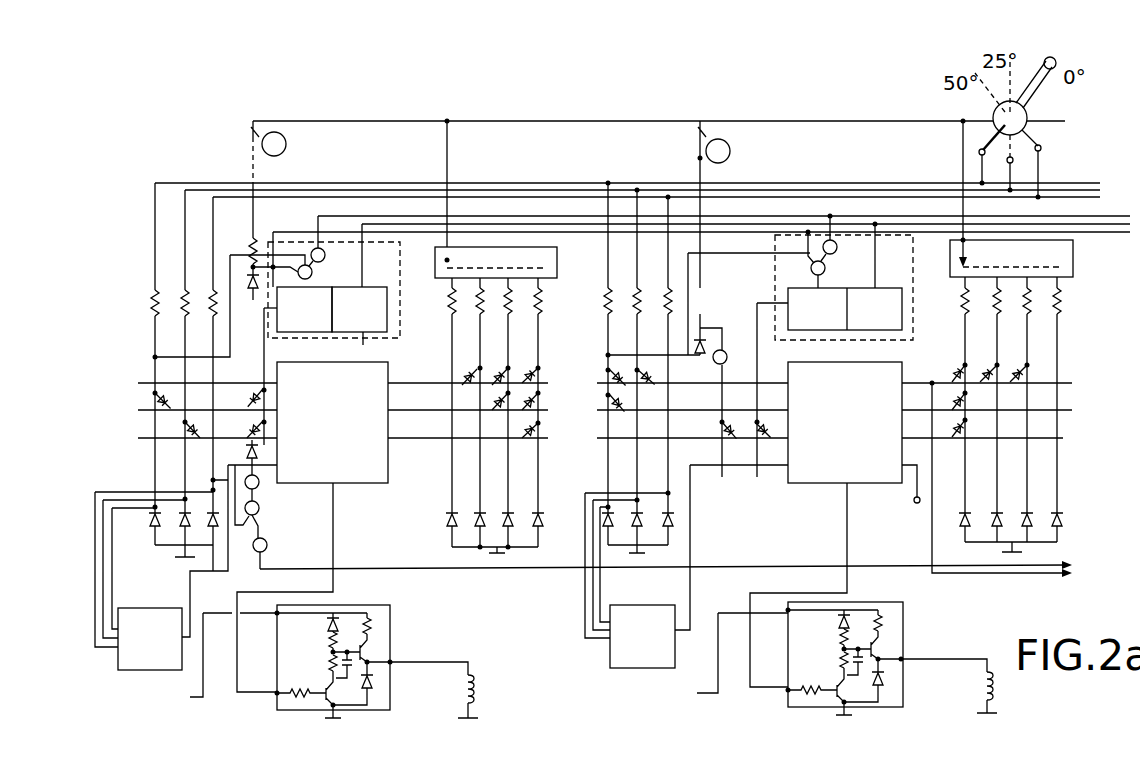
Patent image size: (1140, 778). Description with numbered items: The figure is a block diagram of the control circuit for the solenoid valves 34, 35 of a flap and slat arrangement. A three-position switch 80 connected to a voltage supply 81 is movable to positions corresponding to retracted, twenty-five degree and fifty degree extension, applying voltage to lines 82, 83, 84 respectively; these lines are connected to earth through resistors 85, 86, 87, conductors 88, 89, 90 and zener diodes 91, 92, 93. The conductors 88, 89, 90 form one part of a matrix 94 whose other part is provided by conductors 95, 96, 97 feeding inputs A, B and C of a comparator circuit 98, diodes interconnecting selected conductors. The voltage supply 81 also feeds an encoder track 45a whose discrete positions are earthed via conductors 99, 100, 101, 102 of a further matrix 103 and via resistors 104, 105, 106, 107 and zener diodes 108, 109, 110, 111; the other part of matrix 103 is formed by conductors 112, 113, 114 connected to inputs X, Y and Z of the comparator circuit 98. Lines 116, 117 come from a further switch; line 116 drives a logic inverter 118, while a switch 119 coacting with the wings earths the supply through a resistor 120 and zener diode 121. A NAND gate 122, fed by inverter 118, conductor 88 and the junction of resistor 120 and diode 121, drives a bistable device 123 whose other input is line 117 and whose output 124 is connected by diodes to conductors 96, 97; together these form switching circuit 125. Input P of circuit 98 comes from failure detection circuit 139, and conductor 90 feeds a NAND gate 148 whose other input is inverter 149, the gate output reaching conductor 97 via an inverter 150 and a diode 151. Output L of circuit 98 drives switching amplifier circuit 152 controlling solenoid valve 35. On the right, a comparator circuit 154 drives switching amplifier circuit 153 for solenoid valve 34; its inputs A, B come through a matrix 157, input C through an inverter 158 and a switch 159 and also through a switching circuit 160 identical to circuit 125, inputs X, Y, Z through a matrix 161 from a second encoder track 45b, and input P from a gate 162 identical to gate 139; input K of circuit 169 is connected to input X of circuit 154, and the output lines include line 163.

The voltage supply 81 is at (600, 121).
The switch 119 is at (286, 144).
The switch 159 is at (736, 204).
The line 82 is at (830, 183).
The line 83 is at (865, 190).
The line 84 is at (912, 196).
The three-position switch 80 is at (1052, 113).
The line 116 is at (705, 216).
The line 117 is at (768, 224).
The switching circuit 160 is at (950, 262).
The second track of the encoder 45b is at (1065, 277).
The matrix 161 is at (946, 363).
The circuit 169 is at (1012, 490).
The output line Y 163 is at (676, 555).
The comparator circuit 154 is at (877, 478).
The matrix 157 is at (605, 443).
The inverter 158 is at (709, 365).
The conductor 99 is at (452, 346).
The gate 162 is at (636, 617).
The switching amplifier circuit 153 is at (895, 614).
The solenoid valve 34 is at (980, 677).
The switching circuit 125 is at (385, 256).
The output 124 is at (268, 352).
The bistable device 123 is at (330, 294).
The logic inverter 118 is at (325, 256).
The NAND gate 122 is at (312, 273).
The resistor 120 is at (262, 238).
The zener diode 121 is at (252, 290).
The resistor 85 is at (152, 298).
The resistor 86 is at (180, 300).
The resistor 87 is at (206, 300).
The conductor 88 is at (152, 356).
The conductor 89 is at (182, 353).
The conductor 90 is at (212, 353).
The matrix 94 is at (135, 426).
The zener diode 91 is at (150, 528).
The zener diode 92 is at (180, 530).
The zener diode 93 is at (211, 532).
The failure detection circuit 139 is at (138, 660).
The comparator circuit 98 is at (352, 478).
The conductor 95 is at (264, 348).
The conductor 96 is at (246, 410).
The conductor 97 is at (245, 438).
The diode 151 is at (247, 452).
The inverter 150 is at (259, 484).
The NAND gate 148 is at (259, 510).
The inverter 149 is at (267, 545).
The switching amplifier circuit 152 is at (385, 630).
The solenoid valve 35 is at (466, 693).
The track of the encoder 45a is at (567, 250).
The resistor 104 is at (446, 297).
The resistor 105 is at (474, 308).
The resistor 106 is at (502, 308).
The resistor 107 is at (544, 300).
The conductor 100 is at (468, 371).
The conductor 101 is at (500, 371).
The conductor 102 is at (540, 358).
The further matrix 103 is at (549, 398).
The conductor 112 is at (398, 384).
The conductor 113 is at (398, 411).
The conductor 114 is at (398, 439).
The zener diode 109 is at (474, 512).
The zener diode 110 is at (503, 512).
The zener diode 111 is at (541, 512).
The zener diode 108 is at (448, 520).